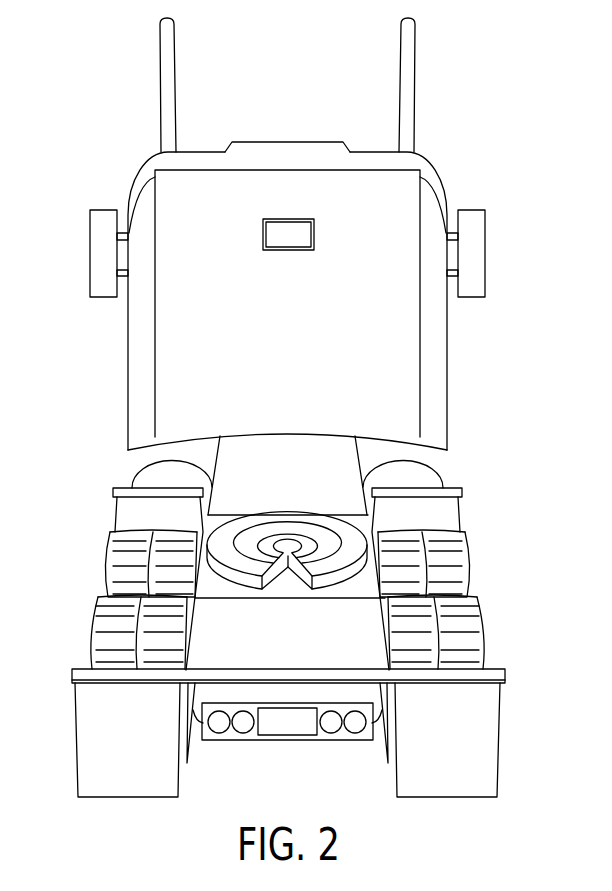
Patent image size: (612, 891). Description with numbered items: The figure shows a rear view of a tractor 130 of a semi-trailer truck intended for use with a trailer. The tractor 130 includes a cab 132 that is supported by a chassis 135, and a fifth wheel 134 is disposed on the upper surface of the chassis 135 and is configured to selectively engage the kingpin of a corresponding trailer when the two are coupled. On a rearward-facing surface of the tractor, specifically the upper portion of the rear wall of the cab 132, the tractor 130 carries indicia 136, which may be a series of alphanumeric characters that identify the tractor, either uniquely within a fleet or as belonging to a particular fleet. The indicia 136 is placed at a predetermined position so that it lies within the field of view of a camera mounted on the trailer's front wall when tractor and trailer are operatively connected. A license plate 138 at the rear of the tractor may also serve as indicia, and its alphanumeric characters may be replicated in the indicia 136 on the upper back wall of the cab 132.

The tractor 130 is at (540, 173).
The cab 132 is at (101, 333).
The fifth wheel 134 is at (320, 489).
The chassis 135 is at (347, 640).
The indicia 136 is at (285, 275).
The license plate 138 is at (284, 759).